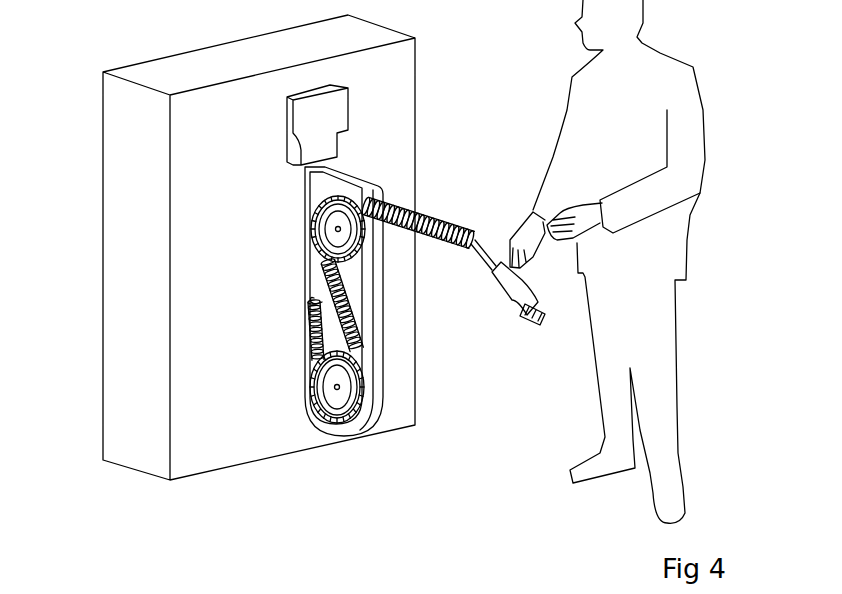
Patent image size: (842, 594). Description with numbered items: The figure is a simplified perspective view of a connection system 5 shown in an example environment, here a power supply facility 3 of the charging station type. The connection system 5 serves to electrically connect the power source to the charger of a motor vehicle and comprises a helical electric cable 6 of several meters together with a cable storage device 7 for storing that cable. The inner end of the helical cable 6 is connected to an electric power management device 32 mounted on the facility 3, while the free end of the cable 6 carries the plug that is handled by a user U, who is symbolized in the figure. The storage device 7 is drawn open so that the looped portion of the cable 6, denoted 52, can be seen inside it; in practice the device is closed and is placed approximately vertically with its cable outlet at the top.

The facility 3 is at (207, 206).
The electric power management device 32 is at (320, 118).
The connection system 5 is at (361, 301).
The coiled cable loop 52 is at (290, 298).
The cable storage device 7 is at (372, 363).
The helical electric cable 6 is at (440, 208).
The user U is at (690, 133).